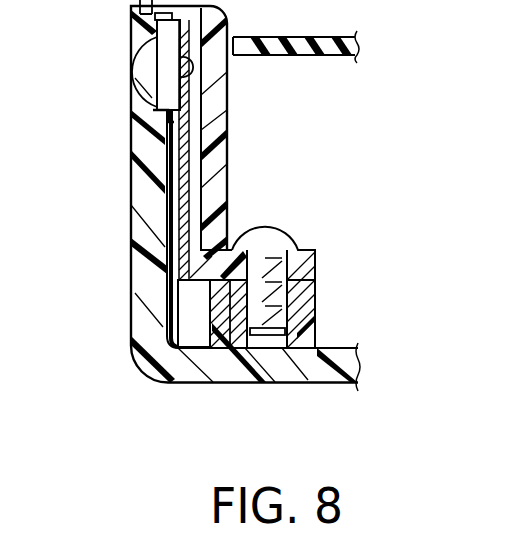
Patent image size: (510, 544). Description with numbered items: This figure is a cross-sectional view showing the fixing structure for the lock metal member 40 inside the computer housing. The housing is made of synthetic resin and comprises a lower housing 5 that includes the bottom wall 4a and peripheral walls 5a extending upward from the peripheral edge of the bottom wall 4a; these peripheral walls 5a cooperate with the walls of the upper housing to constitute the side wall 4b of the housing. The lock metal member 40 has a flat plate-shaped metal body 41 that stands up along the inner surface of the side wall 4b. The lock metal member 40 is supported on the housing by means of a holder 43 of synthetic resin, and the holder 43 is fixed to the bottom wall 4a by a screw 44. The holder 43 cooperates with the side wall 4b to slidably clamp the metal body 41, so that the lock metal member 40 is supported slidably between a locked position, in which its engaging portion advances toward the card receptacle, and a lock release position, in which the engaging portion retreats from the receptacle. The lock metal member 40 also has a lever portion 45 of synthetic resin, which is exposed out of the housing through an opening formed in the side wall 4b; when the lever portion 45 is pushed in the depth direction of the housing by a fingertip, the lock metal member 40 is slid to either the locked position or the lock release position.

The lower housing 5 is at (166, 368).
The peripheral walls 5a is at (131, 273).
The side wall 4b is at (148, 199).
The bottom wall 4a is at (323, 365).
The holder 43 is at (215, 112).
The metal body 41 is at (193, 183).
The lock metal member 40 is at (180, 153).
The lever portion 45 is at (162, 70).
The screw 44 is at (278, 234).